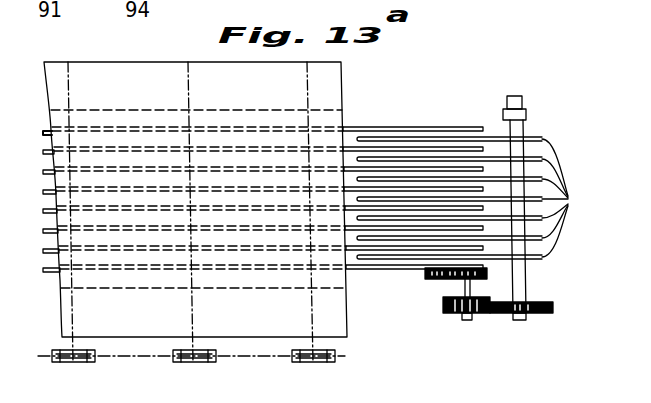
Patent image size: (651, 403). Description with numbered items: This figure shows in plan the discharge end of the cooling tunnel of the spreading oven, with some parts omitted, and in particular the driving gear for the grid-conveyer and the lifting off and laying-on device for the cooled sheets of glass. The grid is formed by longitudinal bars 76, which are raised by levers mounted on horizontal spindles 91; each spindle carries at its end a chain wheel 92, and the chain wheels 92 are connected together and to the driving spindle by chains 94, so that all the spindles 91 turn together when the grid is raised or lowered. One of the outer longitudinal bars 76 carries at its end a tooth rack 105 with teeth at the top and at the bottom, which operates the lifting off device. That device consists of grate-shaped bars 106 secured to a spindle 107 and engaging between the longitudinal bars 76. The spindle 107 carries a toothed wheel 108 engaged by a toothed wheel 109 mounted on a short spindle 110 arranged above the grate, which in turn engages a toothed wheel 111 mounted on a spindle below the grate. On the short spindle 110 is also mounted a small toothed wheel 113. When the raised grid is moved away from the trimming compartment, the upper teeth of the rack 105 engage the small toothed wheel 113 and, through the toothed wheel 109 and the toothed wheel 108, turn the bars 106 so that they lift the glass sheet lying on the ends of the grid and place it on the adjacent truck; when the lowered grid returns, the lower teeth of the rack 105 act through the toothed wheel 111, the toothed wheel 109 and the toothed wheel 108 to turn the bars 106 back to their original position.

The longitudinal bars 76 is at (437, 131).
The horizontal spindles 91 is at (73, 304).
The chain wheels 92 is at (64, 363).
The chains 94 is at (121, 361).
The tooth rack 105 is at (428, 295).
The grate-shaped bars 106 is at (572, 198).
The spindle 107 is at (527, 275).
The toothed wheel 108 is at (499, 327).
The toothed wheel 109 is at (464, 327).
The toothed wheel 111 is at (450, 313).
The short spindle 110 is at (472, 287).
The small toothed wheel 113 is at (460, 281).